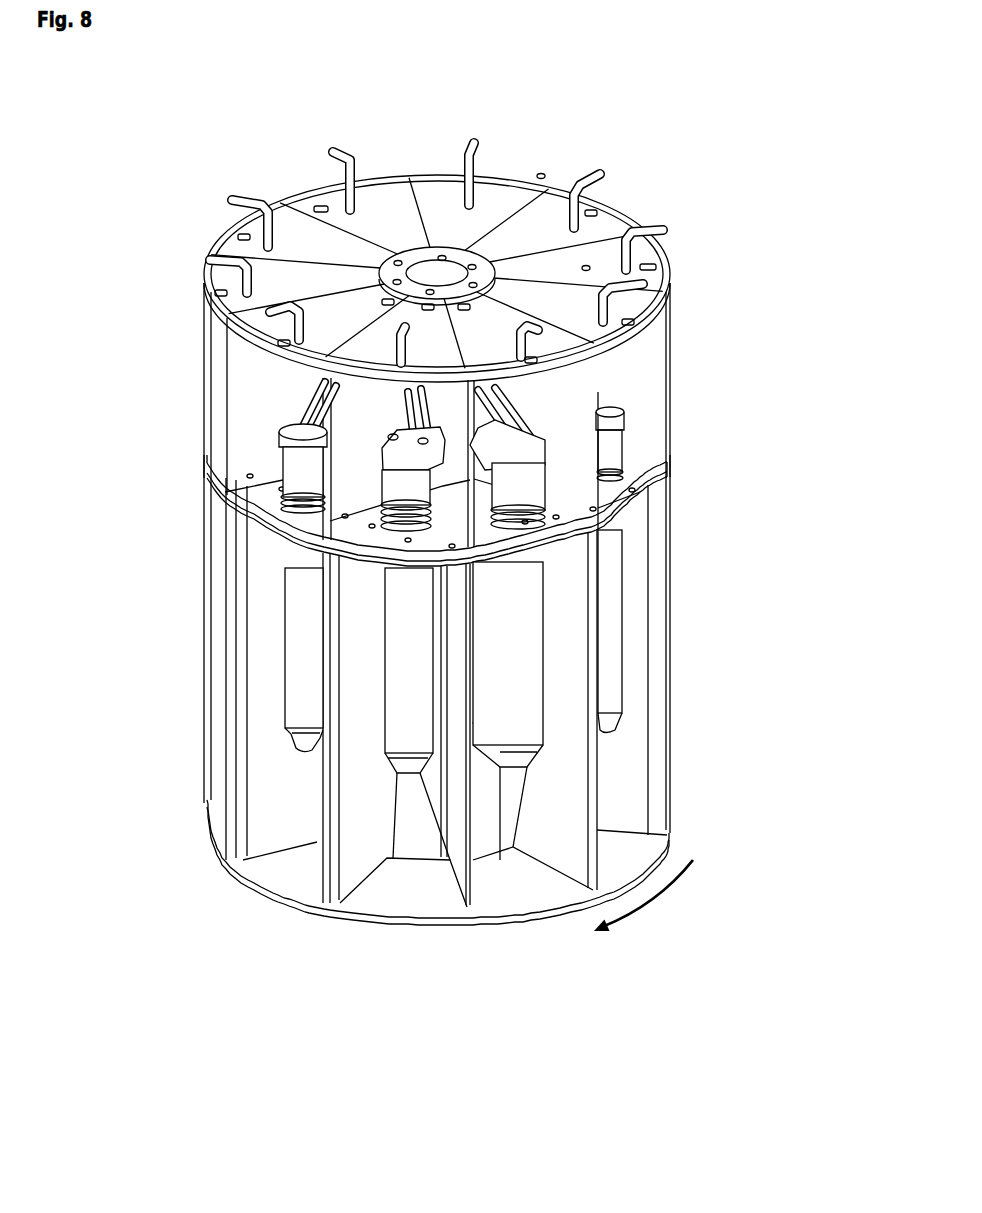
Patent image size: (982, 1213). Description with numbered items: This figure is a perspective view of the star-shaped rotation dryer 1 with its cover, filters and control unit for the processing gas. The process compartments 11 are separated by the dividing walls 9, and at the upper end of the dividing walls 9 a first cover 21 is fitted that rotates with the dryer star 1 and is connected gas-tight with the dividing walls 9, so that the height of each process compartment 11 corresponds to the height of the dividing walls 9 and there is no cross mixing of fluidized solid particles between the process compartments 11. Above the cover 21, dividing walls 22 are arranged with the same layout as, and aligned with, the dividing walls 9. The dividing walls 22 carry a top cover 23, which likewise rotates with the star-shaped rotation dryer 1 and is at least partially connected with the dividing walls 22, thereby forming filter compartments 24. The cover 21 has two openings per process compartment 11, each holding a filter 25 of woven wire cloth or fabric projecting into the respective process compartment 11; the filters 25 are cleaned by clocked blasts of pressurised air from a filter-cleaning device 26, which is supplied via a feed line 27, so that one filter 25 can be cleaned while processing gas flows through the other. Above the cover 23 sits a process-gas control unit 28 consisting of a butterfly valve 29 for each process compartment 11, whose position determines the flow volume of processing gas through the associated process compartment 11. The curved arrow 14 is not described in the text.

The star-shaped rotation dryer 1 is at (92, 85).
The dividing walls 9 is at (567, 815).
The process compartments 11 is at (372, 890).
The direction of rotation 14 is at (643, 900).
The first cover 21 is at (648, 471).
The dividing walls 22 is at (598, 398).
The top cover 23 is at (598, 230).
The filter compartments 24 is at (373, 488).
The filter 25 is at (305, 727).
The filter-cleaning device 26 is at (410, 492).
The feed line 27 is at (470, 143).
The process-gas control unit 28 is at (545, 137).
The butterfly valve 29 is at (320, 208).